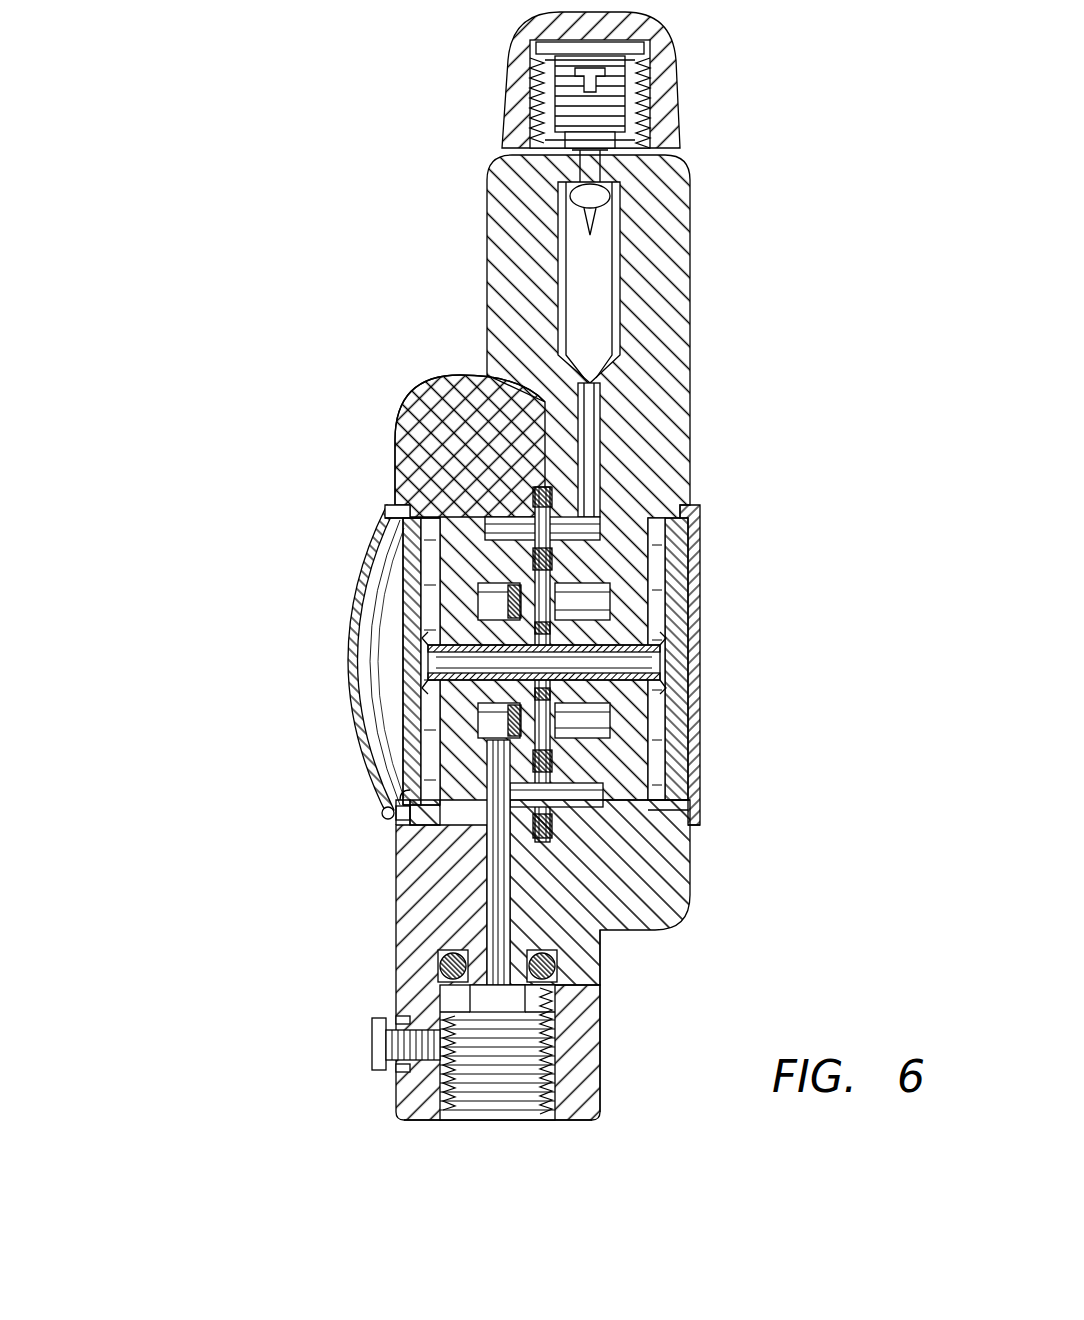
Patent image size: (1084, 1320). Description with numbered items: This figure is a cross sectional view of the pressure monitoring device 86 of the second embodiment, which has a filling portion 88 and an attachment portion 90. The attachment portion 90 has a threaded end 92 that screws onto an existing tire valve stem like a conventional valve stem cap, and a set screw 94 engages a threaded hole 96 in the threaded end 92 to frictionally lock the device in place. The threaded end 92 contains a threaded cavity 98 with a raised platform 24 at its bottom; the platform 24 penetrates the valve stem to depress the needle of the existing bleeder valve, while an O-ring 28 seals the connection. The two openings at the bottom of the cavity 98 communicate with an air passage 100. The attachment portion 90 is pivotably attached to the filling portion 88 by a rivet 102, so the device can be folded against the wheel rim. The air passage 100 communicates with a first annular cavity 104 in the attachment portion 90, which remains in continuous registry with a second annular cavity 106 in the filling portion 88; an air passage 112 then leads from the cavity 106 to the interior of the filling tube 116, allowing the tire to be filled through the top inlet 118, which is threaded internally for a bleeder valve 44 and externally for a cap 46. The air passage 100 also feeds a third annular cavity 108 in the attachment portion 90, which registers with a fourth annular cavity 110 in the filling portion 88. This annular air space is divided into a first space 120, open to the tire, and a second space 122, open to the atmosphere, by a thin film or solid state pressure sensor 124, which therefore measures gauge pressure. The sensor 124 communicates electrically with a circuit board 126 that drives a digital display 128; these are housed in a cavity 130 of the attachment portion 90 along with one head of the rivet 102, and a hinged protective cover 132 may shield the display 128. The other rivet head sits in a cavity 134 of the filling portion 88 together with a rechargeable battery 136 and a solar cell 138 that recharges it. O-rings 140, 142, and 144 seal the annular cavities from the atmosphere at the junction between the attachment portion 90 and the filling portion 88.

The raised platform 24 is at (601, 1050).
The O-ring 28 is at (560, 968).
The bleeder valve 44 is at (555, 118).
The cap 46 is at (682, 115).
The pressure monitoring device 86 is at (742, 318).
The filling portion 88 is at (720, 460).
The attachment portion 90 is at (372, 908).
The threaded end 92 is at (598, 1112).
The set screw 94 is at (372, 1050).
The threaded hole 96 is at (425, 1030).
The threaded cavity 98 is at (505, 1122).
The air passage 100 is at (680, 893).
The rivet 102 is at (645, 683).
The first annular cavity 104 is at (382, 815).
The second annular cavity 106 is at (700, 812).
The third annular cavity 108 is at (498, 606).
The fourth annular cavity 110 is at (562, 588).
The air passage 112 is at (603, 440).
The filling tube 116 is at (691, 182).
The top inlet 118 is at (670, 62).
The first space 120 is at (440, 750).
The second space 122 is at (600, 720).
The pressure sensor 124 is at (430, 658).
The circuit board 126 is at (402, 712).
The digital display 128 is at (397, 582).
The cavity 130 is at (430, 785).
The protective cover 132 is at (375, 548).
The cavity 134 is at (676, 712).
The rechargeable battery 136 is at (682, 610).
The solar cell 138 is at (700, 522).
The O-ring 140 is at (497, 866).
The O-ring 142 is at (550, 778).
The O-ring 144 is at (612, 612).